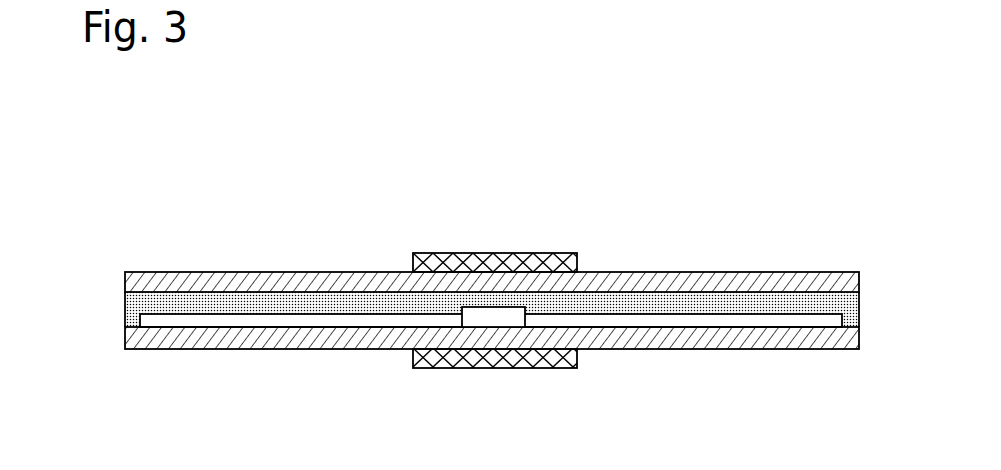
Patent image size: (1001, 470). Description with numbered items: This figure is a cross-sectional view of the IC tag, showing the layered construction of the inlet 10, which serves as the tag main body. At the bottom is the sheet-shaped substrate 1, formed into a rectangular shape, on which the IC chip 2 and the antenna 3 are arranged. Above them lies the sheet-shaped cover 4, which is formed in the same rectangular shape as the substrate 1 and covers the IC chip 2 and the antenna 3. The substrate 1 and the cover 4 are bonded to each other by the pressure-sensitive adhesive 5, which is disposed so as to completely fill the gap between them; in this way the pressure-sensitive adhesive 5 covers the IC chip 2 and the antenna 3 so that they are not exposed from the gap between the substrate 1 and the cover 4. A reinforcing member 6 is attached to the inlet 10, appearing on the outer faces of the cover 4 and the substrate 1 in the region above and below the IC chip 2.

The substrate 1 is at (663, 343).
The IC chip 2 is at (493, 322).
The antenna 3 is at (313, 325).
The cover 4 is at (660, 285).
The pressure-sensitive adhesive 5 is at (130, 303).
The reinforcing member 6 is at (515, 255).
The inlet 10 is at (440, 309).